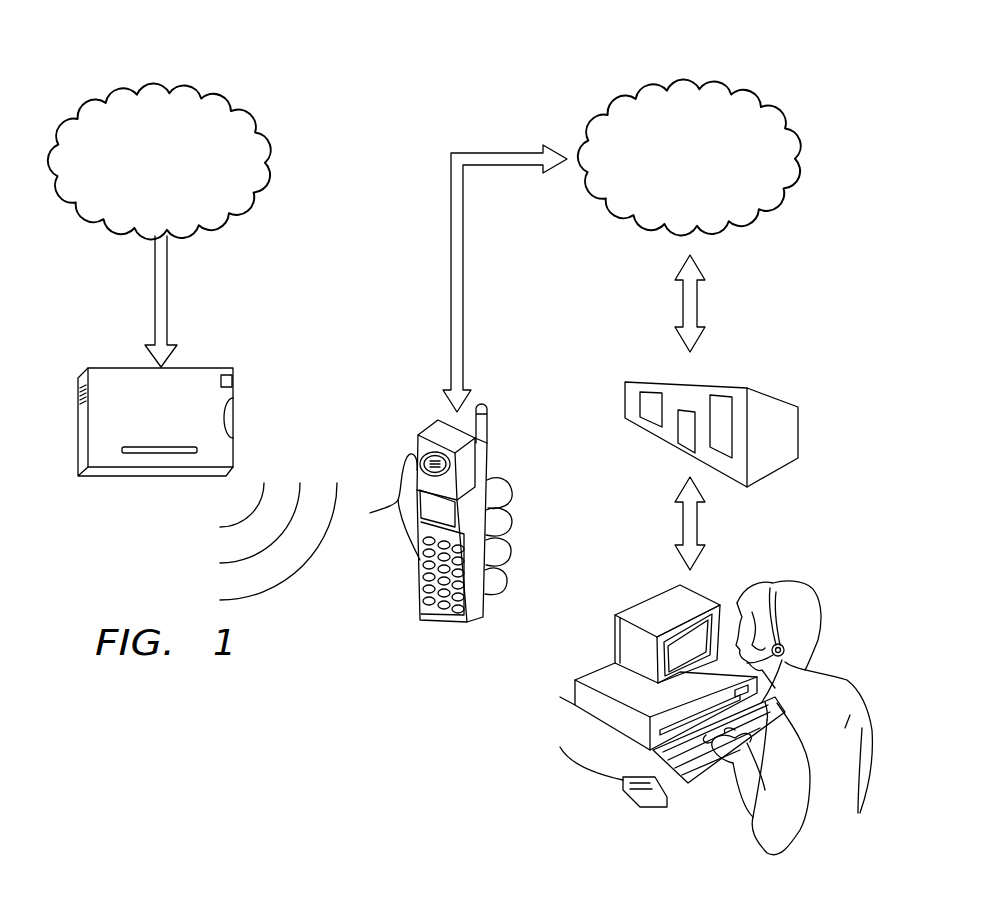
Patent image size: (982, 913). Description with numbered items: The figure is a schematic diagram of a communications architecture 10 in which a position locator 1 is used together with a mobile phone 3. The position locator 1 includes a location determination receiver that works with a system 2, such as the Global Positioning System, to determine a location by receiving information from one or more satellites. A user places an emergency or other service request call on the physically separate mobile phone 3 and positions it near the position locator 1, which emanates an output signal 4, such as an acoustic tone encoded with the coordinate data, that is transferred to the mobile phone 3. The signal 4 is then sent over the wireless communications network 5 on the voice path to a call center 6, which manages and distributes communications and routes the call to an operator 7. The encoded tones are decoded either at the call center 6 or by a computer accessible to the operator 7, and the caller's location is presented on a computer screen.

The position locator 1 is at (149, 476).
The system 2 is at (98, 95).
The mobile phone 3 is at (437, 615).
The output signal 4 is at (269, 590).
The wireless communications network 5 is at (752, 92).
The call center 6 is at (800, 430).
The operator 7 is at (640, 602).
The communications architecture 10 is at (540, 78).